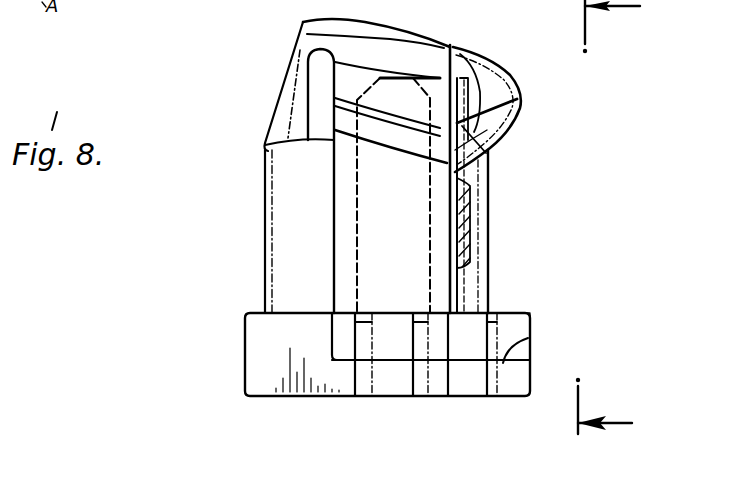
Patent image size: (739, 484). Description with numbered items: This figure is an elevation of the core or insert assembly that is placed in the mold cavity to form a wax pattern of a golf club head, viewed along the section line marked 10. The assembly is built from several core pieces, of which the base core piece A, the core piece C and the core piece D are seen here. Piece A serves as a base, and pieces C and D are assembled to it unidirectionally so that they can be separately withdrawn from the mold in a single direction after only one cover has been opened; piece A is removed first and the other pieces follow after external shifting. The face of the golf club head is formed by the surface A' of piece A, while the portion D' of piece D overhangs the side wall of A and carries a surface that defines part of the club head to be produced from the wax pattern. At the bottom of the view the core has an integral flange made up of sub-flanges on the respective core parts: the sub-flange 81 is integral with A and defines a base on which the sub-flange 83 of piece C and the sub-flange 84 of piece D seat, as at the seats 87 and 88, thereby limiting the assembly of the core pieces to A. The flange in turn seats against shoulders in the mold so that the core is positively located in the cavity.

The section line 10 is at (608, 217).
The sub-flange 81 is at (453, 384).
The sub-flange 83 is at (340, 335).
The sub-flange 84 is at (512, 320).
The seat 87 is at (372, 360).
The seat 88 is at (530, 334).
The core piece A is at (283, 231).
The face surface A' is at (327, 166).
The core piece C is at (397, 238).
The core piece D is at (506, 179).
The overhanging portion D' is at (522, 109).